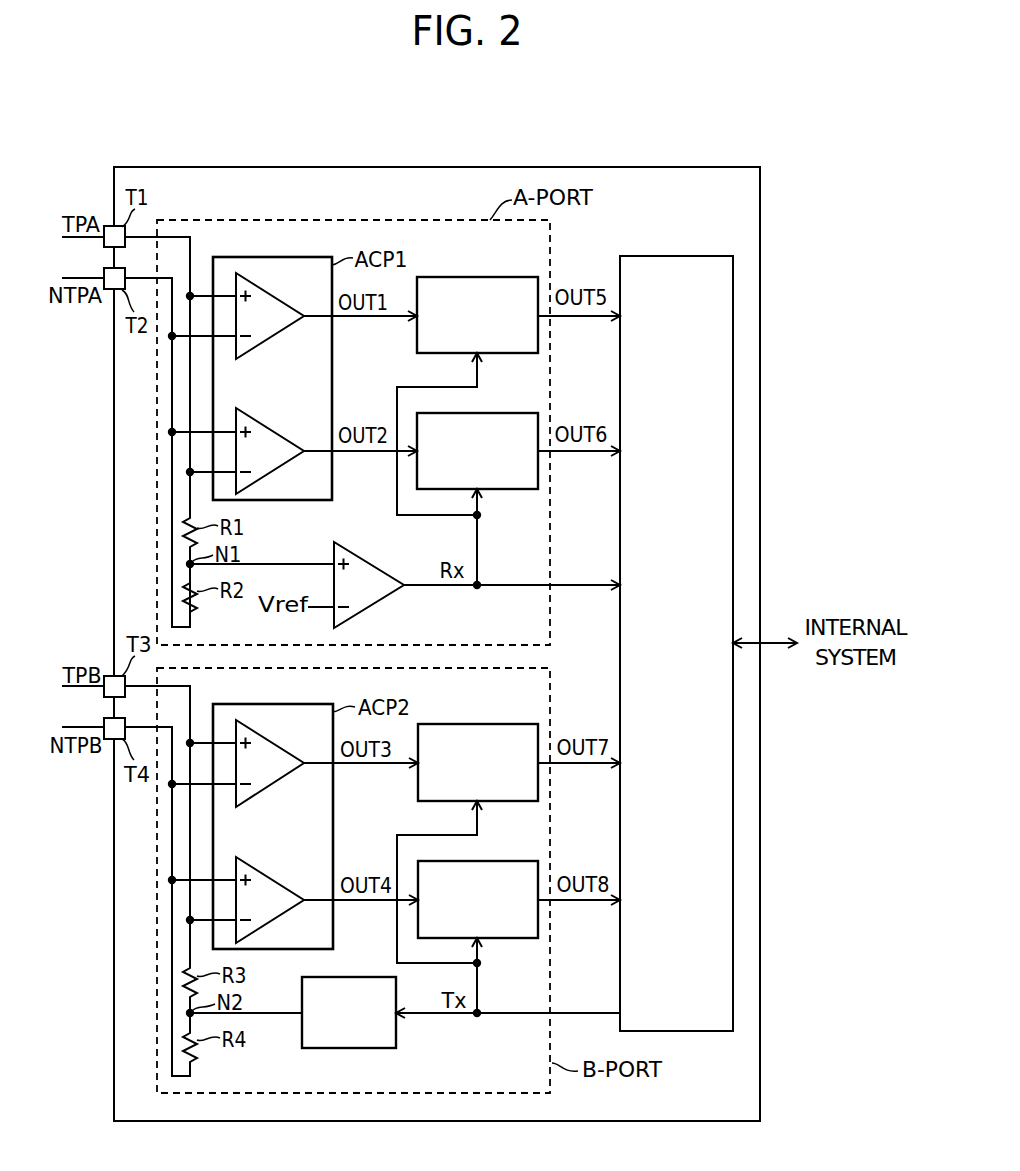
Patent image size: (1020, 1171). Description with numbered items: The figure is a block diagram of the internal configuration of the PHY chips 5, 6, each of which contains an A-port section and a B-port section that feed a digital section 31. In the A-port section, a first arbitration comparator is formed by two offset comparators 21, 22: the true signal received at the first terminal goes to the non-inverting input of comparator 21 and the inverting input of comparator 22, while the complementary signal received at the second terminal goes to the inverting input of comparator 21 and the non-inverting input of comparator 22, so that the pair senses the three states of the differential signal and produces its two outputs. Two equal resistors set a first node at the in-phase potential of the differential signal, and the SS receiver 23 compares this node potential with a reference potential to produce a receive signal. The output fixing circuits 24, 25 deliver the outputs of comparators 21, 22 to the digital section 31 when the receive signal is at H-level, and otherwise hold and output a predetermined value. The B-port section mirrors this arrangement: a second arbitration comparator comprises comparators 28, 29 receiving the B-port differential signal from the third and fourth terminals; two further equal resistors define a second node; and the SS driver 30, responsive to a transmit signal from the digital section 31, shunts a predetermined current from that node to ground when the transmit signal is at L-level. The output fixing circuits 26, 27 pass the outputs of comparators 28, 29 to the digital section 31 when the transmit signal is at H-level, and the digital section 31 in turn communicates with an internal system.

The PHY chip 5 is at (437, 613).
The PHY chip 6 is at (445, 167).
The comparator 21 is at (272, 291).
The comparator 22 is at (272, 428).
The speed signal (SS) receiver 23 is at (368, 563).
The output fixing circuit 24 is at (504, 277).
The output fixing circuit 25 is at (504, 413).
The output fixing circuit 26 is at (504, 724).
The output fixing circuit 27 is at (504, 861).
The comparator 28 is at (274, 740).
The comparator 29 is at (274, 876).
The SS driver 30 is at (396, 1037).
The digital section 31 is at (670, 256).